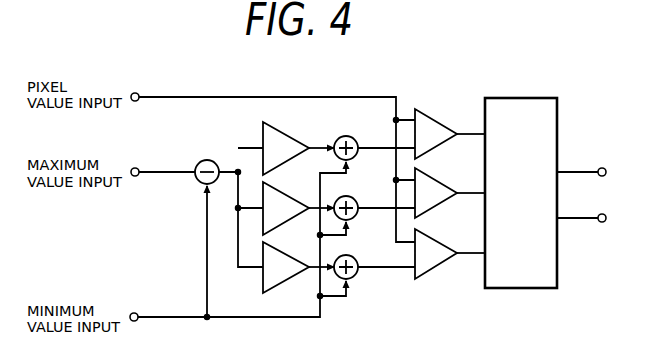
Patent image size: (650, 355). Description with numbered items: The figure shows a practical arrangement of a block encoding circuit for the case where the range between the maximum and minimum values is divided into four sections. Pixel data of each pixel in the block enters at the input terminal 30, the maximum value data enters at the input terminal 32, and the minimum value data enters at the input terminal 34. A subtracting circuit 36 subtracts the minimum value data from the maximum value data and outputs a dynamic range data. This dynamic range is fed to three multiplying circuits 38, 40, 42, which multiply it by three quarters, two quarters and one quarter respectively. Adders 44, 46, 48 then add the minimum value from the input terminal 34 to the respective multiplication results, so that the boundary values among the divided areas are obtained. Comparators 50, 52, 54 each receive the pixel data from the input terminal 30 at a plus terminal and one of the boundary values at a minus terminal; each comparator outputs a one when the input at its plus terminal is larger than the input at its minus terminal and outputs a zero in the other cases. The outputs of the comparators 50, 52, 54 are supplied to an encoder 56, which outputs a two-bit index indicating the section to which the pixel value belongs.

The input terminal 30 is at (139, 93).
The input terminal 32 is at (139, 176).
The input terminal 34 is at (138, 313).
The subtracting circuit 36 is at (207, 160).
The multiplying circuit 38 is at (291, 134).
The multiplying circuit 40 is at (284, 195).
The multiplying circuit 42 is at (282, 253).
The adder 44 is at (355, 139).
The adder 46 is at (355, 199).
The adder 48 is at (355, 258).
The comparator 50 is at (437, 120).
The comparator 52 is at (437, 181).
The comparator 54 is at (437, 242).
The encoder 56 is at (558, 114).